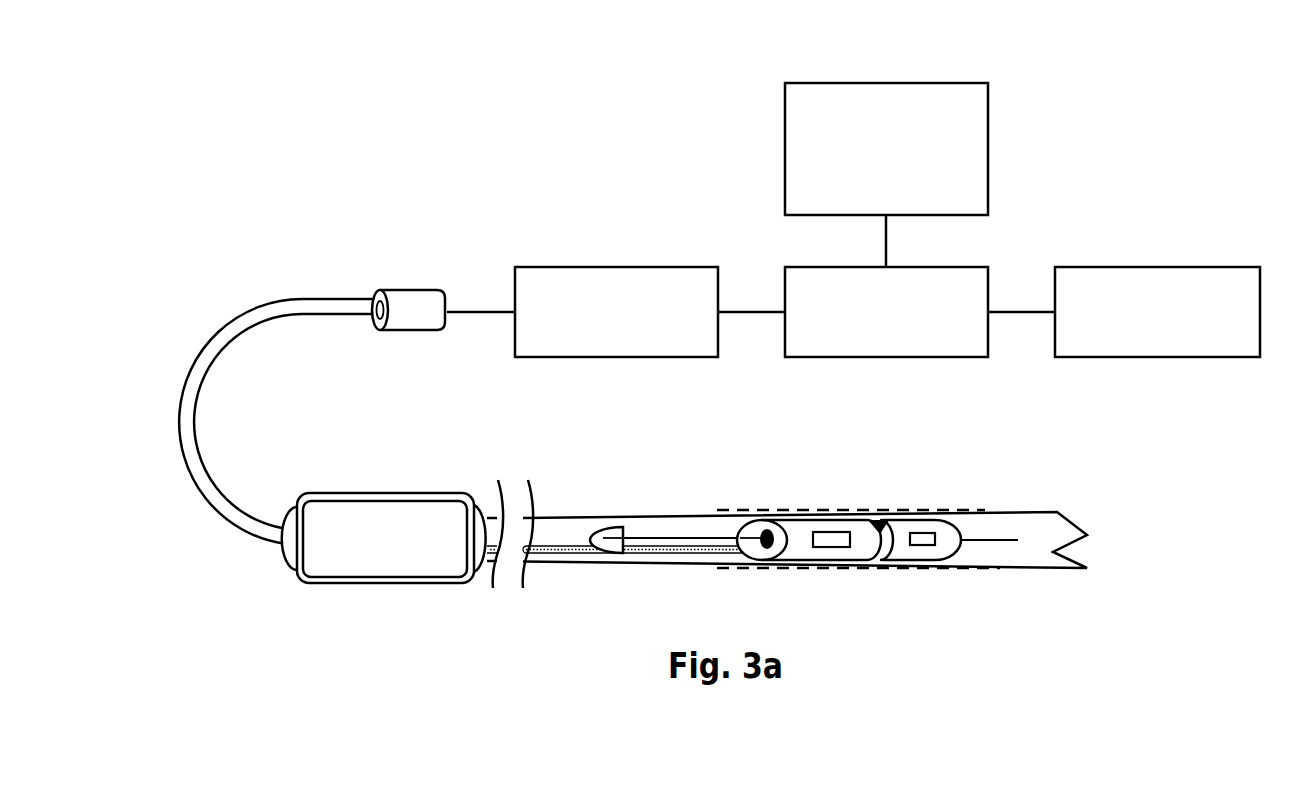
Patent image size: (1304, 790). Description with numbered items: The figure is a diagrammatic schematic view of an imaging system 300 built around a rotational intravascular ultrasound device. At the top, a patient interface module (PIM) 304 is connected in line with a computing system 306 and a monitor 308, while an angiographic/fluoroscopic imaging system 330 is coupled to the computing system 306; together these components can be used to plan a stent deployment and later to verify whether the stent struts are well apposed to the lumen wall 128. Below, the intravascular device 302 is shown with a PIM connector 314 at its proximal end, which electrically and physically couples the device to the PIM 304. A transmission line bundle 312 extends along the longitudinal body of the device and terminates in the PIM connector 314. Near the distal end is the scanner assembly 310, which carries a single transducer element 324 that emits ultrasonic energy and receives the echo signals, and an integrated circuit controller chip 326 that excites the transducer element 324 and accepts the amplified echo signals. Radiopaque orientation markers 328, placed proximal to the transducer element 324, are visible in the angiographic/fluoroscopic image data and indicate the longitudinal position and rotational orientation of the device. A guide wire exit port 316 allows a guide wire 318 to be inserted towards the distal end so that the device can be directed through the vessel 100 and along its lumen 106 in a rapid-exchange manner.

The imaging system 300 is at (553, 160).
The intravascular device 302 is at (890, 472).
The patient interface module (PIM) 304 is at (598, 266).
The computing system 306 is at (862, 266).
The monitor 308 is at (1132, 266).
The angiographic/fluoroscopic imaging system 330 is at (860, 83).
The PIM connector 314 is at (435, 290).
The vessel 100 is at (787, 579).
The lumen 106 is at (997, 552).
The transmission line bundle 312 is at (633, 557).
The guide wire exit port 316 is at (606, 556).
The scanner assembly 310 is at (813, 562).
The integrated circuit controller chip 326 is at (832, 531).
The orientation marker 328 is at (874, 522).
The guide wire 318 is at (988, 538).
The transducer element 324 is at (923, 547).
The lumen wall 128 is at (998, 513).